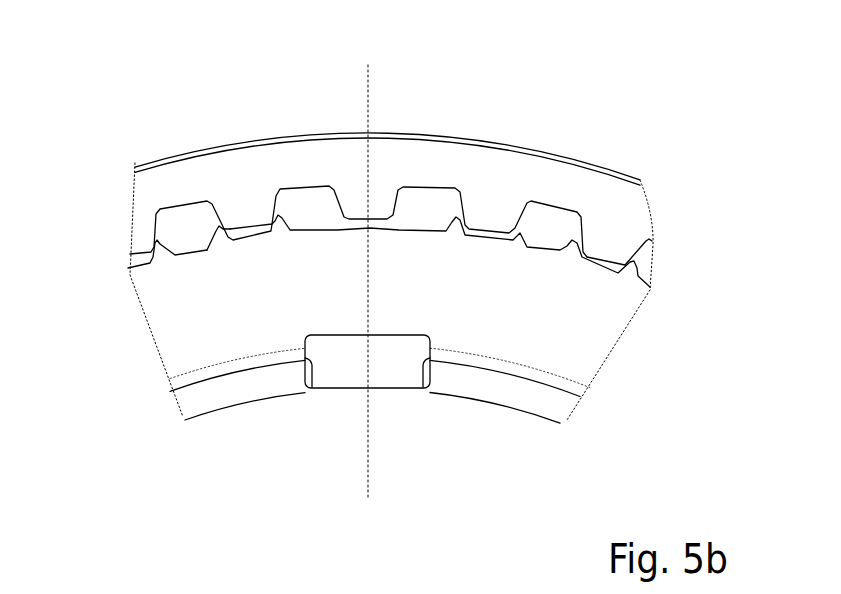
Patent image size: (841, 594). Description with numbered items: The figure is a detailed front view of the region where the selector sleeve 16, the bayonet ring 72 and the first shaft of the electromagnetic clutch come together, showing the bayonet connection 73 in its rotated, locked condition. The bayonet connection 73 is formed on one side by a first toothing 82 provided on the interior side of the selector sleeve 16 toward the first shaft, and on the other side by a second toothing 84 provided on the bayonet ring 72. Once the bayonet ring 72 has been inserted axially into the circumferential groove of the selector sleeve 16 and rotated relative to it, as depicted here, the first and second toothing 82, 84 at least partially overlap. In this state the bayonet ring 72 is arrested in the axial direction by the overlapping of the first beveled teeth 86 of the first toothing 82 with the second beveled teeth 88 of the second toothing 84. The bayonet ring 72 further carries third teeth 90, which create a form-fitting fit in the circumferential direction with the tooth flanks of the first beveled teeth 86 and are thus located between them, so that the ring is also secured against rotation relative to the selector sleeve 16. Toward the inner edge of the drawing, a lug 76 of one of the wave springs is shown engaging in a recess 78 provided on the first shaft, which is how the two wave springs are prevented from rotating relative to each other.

The selector sleeve 16 is at (252, 162).
The first beveled teeth 86 is at (362, 207).
The bayonet connection 73 is at (662, 245).
The first toothing 82 is at (637, 217).
The second toothing 84 is at (692, 292).
The bayonet ring 72 is at (588, 322).
The recesses 78 is at (355, 400).
The lugs 76 is at (367, 373).
The second beveled teeth 88 is at (338, 207).
The third teeth 90 is at (216, 231).